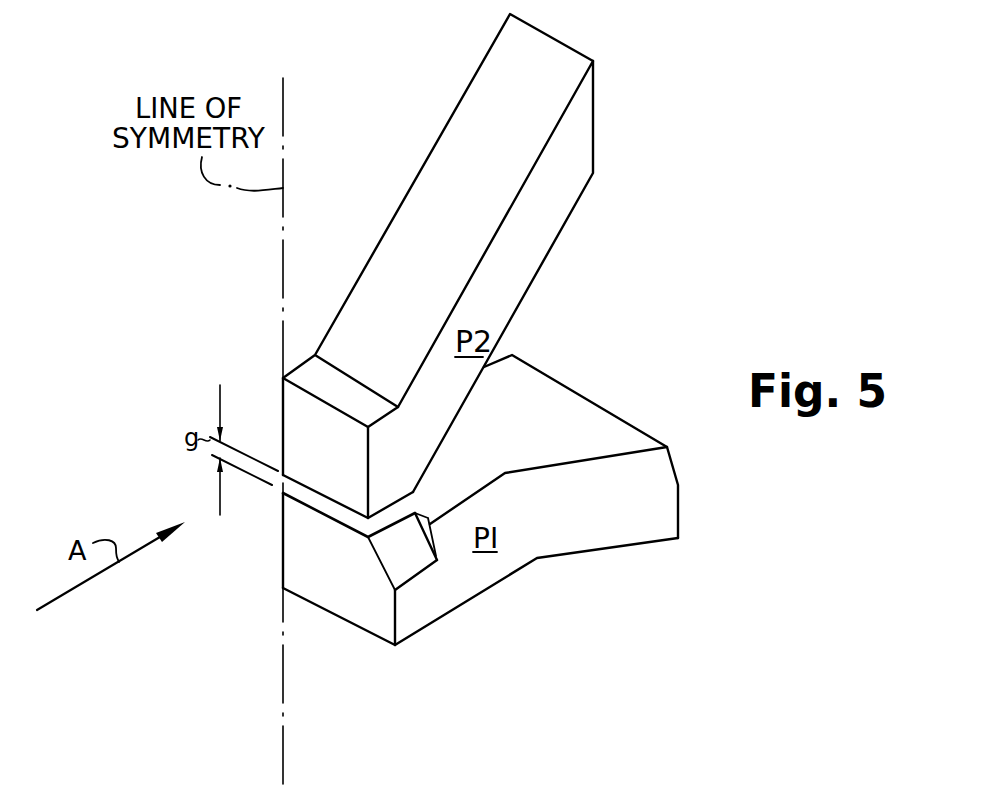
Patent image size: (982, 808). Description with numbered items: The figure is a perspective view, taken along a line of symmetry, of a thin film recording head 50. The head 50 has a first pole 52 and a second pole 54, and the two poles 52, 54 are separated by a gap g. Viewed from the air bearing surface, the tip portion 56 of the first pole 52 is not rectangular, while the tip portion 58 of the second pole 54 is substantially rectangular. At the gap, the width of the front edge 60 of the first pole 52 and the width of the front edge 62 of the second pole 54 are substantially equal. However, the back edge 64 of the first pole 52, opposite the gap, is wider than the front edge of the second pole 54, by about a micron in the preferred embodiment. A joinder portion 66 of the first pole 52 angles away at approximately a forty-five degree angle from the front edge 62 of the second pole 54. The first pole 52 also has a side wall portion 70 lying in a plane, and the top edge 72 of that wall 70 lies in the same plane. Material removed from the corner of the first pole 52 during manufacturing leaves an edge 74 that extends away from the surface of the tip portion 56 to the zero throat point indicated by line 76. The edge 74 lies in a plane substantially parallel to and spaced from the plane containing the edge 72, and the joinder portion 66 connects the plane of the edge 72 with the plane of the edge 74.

The thin film recording head 50 is at (418, 147).
The first pole (P1) 52 is at (605, 394).
The second pole (P2) 54 is at (566, 261).
The tip portion of first pole 56 is at (323, 568).
The tip portion of second pole 58 is at (312, 419).
The front edge of first pole 60 is at (325, 516).
The front edge of second pole 62 is at (314, 487).
The back edge of first pole 64 is at (355, 627).
The joinder portion 66 is at (403, 558).
The side wall portion 70 is at (455, 575).
The top edge of side wall 72 is at (407, 578).
The edge 74 is at (388, 537).
The zero throat point line 76 is at (435, 524).